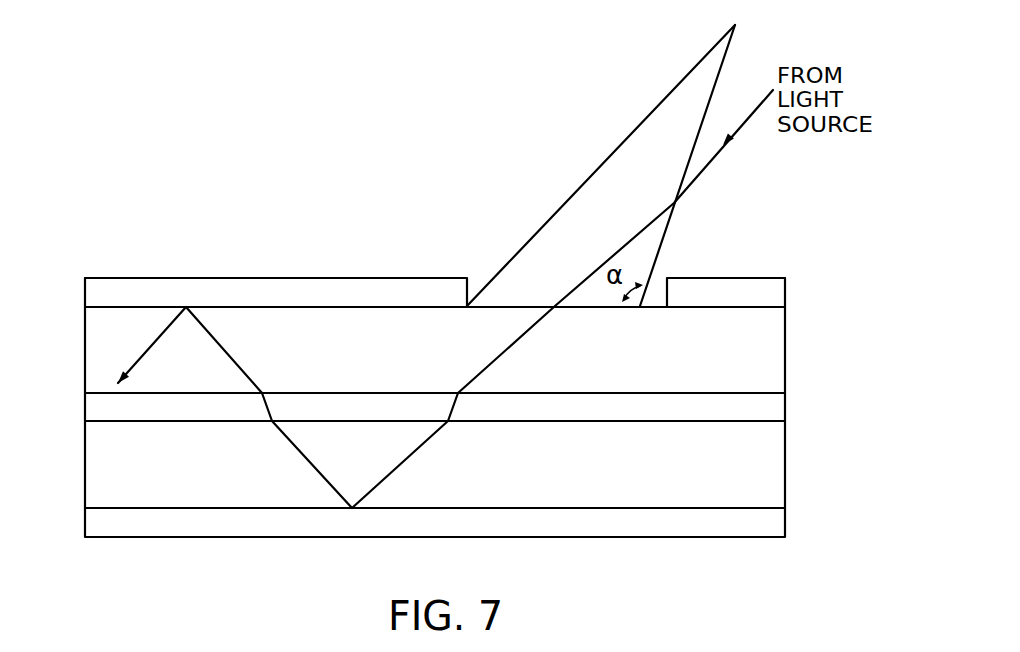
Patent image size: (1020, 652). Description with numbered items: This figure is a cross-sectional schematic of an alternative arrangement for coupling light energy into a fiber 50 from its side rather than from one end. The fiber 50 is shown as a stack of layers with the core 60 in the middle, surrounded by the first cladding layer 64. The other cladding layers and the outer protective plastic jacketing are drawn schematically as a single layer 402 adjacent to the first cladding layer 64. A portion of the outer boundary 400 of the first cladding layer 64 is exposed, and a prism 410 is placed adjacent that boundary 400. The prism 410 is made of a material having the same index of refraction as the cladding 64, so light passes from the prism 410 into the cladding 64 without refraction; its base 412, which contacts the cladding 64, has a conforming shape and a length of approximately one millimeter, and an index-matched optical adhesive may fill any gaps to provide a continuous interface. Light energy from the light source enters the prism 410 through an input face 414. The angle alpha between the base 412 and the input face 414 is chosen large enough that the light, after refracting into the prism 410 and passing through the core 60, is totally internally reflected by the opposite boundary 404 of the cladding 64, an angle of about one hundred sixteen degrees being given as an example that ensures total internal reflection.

The fiber 50 is at (687, 553).
The core 60 is at (95, 413).
The first cladding layer 64 is at (752, 336).
The outer boundary 400 is at (655, 306).
The single layer 402 is at (192, 290).
The opposite boundary 404 is at (170, 508).
The prism 410 is at (587, 192).
The base 412 is at (514, 306).
The input face 414 is at (720, 75).